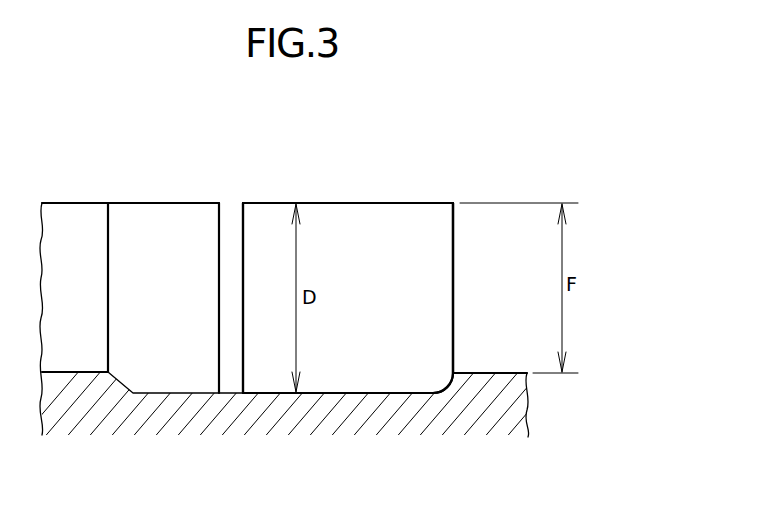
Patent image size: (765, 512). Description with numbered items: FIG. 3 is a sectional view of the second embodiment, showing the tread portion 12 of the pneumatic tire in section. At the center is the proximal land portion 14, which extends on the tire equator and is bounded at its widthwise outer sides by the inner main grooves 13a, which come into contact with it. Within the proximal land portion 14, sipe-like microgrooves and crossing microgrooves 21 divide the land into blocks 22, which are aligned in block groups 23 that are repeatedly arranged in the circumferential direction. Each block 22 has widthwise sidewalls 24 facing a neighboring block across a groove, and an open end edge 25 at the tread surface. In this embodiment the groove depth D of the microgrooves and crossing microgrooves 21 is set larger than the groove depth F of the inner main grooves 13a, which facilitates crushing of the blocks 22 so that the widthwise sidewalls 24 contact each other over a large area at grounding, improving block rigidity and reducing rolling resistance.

The tread portion 12 is at (347, 178).
The inner main groove 13a is at (490, 366).
The proximal land portion 14 is at (297, 192).
The crossing microgroove 21 is at (236, 346).
The block 22 is at (158, 223).
The block group 23 is at (458, 262).
The widthwise sidewall 24 is at (216, 264).
The open end edge 25 is at (217, 202).